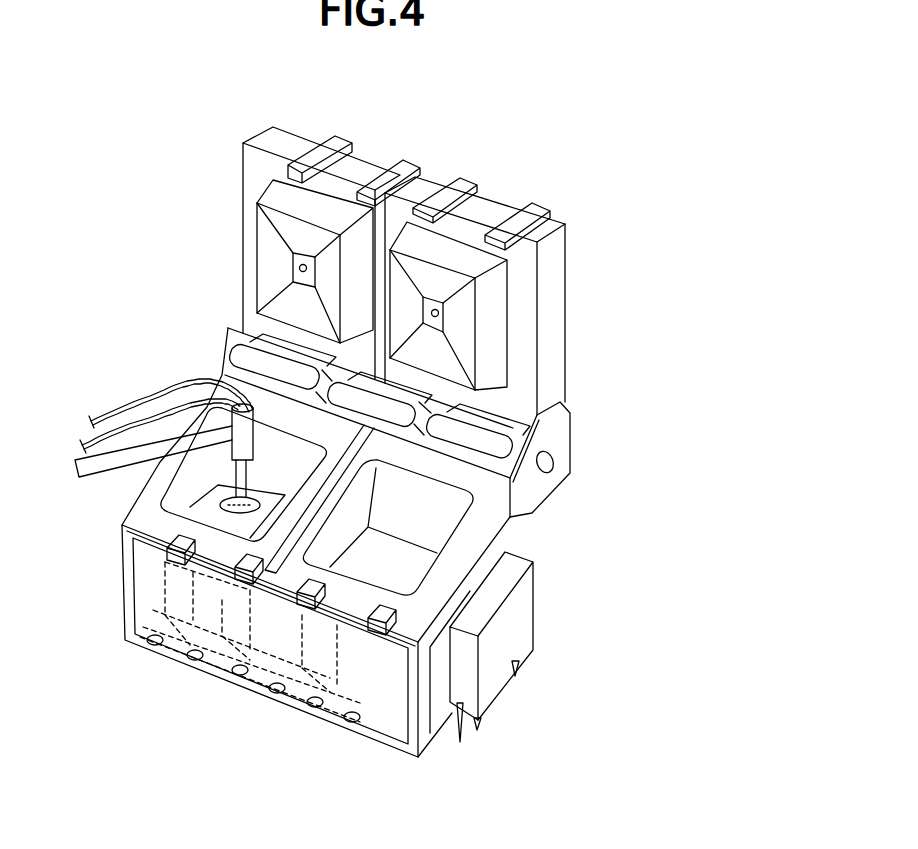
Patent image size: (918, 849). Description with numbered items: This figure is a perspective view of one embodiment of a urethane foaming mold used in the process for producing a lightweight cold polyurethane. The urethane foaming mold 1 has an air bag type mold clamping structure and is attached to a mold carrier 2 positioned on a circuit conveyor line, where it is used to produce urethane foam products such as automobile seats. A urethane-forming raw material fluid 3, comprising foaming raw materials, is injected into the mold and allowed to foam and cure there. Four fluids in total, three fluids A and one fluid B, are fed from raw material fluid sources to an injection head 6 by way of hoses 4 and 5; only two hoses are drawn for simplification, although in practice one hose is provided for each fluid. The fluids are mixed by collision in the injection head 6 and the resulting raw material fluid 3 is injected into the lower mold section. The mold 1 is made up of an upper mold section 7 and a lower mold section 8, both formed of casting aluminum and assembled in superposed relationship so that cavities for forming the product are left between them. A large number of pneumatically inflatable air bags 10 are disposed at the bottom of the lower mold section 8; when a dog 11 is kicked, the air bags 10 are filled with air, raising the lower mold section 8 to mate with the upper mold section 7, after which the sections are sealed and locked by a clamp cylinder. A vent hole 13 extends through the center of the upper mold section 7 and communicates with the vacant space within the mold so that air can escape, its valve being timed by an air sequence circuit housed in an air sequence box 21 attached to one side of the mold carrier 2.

The urethane foaming mold 1 is at (254, 237).
The mold carrier 2 is at (433, 738).
The urethane-forming raw material fluid 3 is at (168, 552).
The hose 4 is at (158, 388).
The hose 5 is at (115, 428).
The injection head 6 is at (213, 372).
The upper mold section 7 is at (275, 195).
The lower mold section 8 is at (152, 494).
The air bags 10 is at (345, 720).
The dog 11 is at (497, 693).
The vent hole 13 is at (300, 268).
The air sequence box 21 is at (527, 618).